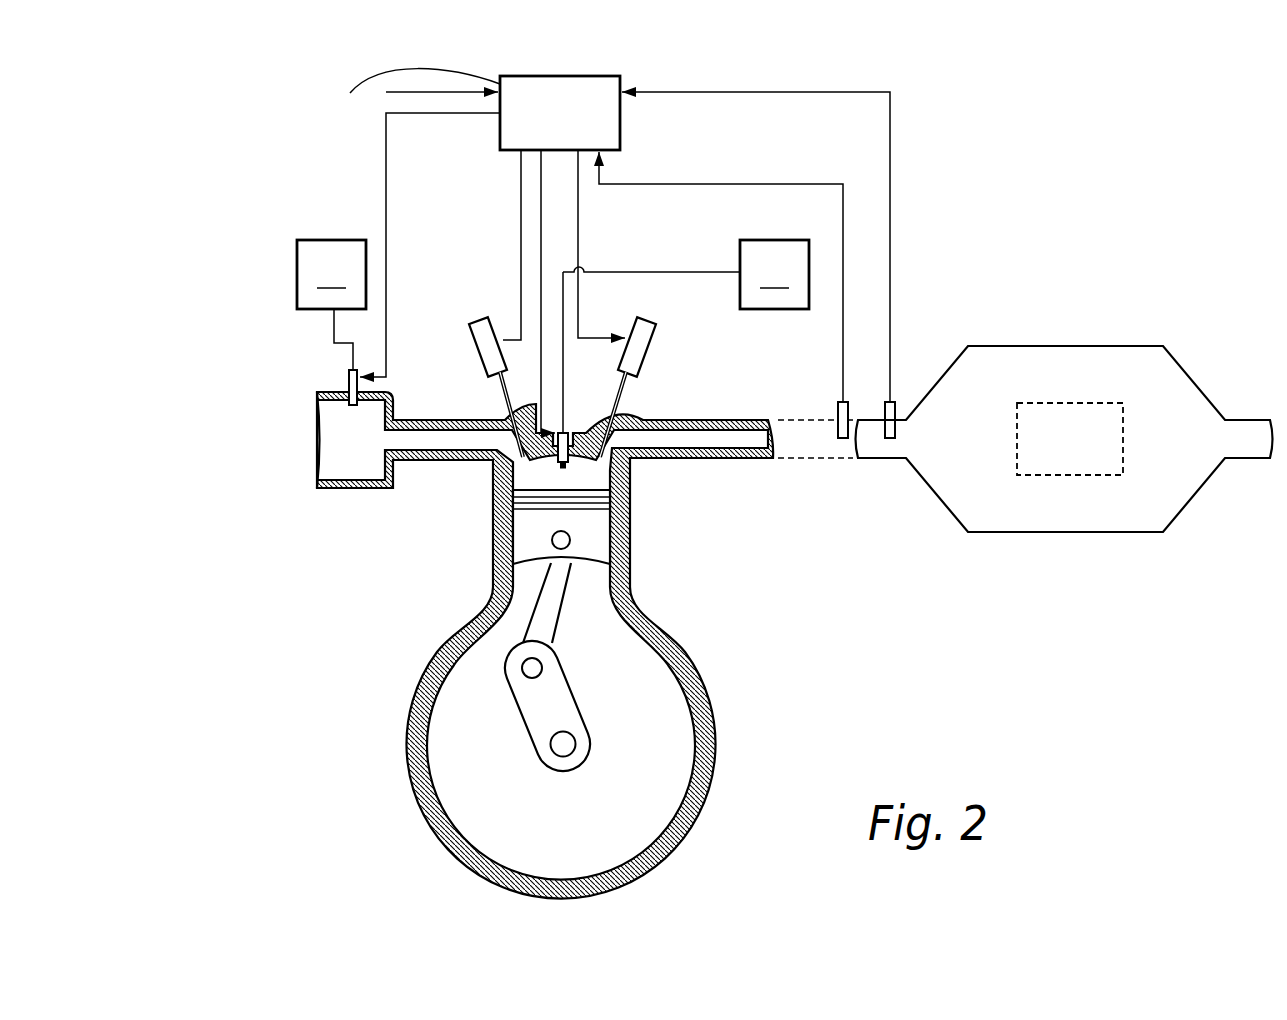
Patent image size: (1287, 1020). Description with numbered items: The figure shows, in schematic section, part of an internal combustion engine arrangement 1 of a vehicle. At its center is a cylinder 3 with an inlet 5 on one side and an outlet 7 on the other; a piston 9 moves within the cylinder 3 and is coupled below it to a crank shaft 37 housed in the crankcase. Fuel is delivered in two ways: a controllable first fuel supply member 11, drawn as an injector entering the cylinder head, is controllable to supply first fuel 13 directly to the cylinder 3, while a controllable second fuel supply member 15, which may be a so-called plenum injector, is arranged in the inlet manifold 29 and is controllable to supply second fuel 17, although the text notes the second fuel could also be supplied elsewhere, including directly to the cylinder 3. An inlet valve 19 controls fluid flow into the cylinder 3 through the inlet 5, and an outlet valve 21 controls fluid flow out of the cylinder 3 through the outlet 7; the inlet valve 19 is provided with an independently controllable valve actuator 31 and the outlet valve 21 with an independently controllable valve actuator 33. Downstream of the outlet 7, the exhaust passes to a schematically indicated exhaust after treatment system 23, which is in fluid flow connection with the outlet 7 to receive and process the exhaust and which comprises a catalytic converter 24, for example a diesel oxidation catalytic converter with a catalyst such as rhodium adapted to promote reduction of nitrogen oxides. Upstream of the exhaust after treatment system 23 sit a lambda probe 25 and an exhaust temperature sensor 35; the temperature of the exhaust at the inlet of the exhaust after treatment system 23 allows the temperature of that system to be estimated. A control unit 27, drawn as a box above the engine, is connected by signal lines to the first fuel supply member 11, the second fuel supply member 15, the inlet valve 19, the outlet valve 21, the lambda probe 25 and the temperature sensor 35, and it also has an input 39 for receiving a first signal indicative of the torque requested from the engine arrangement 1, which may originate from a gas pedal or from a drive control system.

The ICE arrangement 1 is at (731, 502).
The cylinder 3 is at (602, 482).
The inlet 5 is at (527, 472).
The outlet 7 is at (587, 477).
The piston 9 is at (528, 543).
The first fuel supply member 11 is at (572, 433).
The first fuel 13 is at (686, 274).
The second fuel supply member 15 is at (347, 378).
The second fuel 17 is at (331, 305).
The inlet valve 19 is at (492, 395).
The outlet valve 21 is at (638, 397).
The exhaust after treatment system 23 is at (1066, 312).
The catalytic converter 24 is at (1085, 475).
The lambda probe 25 is at (892, 410).
The control unit 27 is at (620, 122).
The inlet manifold 29 is at (347, 378).
The valve actuator 31 is at (482, 353).
The valve actuator 33 is at (645, 363).
The temperature sensor 35 is at (843, 438).
The crank shaft 37 is at (560, 745).
The input 39 is at (406, 96).